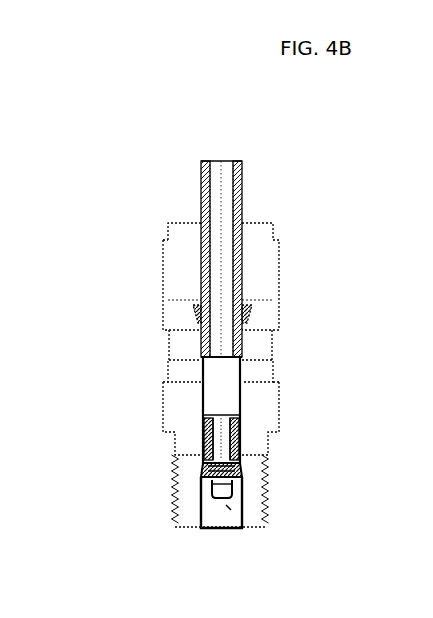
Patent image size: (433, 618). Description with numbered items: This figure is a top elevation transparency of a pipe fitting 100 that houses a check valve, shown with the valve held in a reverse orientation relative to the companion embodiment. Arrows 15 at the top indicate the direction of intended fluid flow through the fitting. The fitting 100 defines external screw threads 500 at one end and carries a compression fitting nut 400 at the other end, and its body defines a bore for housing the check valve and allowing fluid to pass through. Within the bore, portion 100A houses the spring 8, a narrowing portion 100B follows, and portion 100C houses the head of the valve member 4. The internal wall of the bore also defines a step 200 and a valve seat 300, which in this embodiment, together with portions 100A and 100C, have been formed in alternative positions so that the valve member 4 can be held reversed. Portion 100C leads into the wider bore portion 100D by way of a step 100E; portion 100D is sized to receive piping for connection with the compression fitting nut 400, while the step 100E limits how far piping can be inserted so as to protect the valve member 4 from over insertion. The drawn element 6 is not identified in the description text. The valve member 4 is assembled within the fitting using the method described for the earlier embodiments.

The fitting 100 is at (165, 190).
The arrows 15 is at (218, 147).
The compression fitting nut 400 is at (175, 270).
The wider bore portion 100D is at (280, 270).
The step 100E is at (175, 357).
The bore portion 100C is at (268, 370).
The narrowing portion 100B is at (205, 405).
The inner sleeve 6 is at (203, 420).
The spring 8 is at (240, 435).
The valve seat 300 is at (205, 475).
The step 200 is at (240, 462).
The bore portion 100A is at (203, 505).
The external screw threads 500 is at (270, 500).
The valve member 4 is at (265, 535).